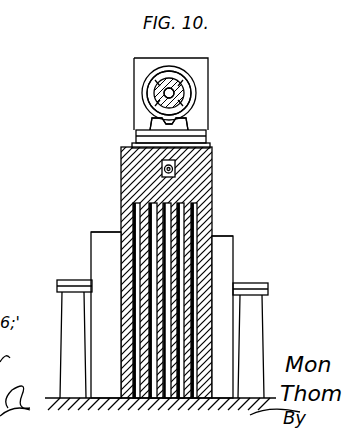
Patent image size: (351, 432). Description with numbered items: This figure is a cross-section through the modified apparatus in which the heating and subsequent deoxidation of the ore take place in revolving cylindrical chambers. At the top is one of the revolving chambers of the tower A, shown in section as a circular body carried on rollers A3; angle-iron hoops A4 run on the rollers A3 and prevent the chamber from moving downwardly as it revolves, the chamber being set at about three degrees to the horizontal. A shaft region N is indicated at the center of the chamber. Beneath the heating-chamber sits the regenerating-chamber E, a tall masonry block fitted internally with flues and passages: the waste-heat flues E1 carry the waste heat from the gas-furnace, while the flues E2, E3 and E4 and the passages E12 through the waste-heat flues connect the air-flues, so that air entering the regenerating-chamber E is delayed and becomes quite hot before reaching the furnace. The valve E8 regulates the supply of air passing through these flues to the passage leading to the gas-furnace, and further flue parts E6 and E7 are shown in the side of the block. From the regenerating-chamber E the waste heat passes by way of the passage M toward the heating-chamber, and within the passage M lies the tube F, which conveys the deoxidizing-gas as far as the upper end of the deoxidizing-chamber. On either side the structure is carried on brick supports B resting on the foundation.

The tower A is at (171, 103).
The motor shaft N is at (196, 95).
The angle-iron hoops A4 is at (198, 108).
The rollers A3 is at (190, 120).
The regenerating-chamber E is at (200, 215).
The tube F is at (175, 166).
The passage M is at (172, 170).
The waste-heat flues E1 is at (165, 261).
The passages through the waste-heat flues E12 is at (168, 250).
The panel top E7 is at (185, 266).
The flue E2 is at (182, 304).
The guide rod E6 is at (152, 334).
The valve E3 is at (136, 358).
The flue E4 is at (194, 316).
The valve E8 is at (180, 347).
The support pillar B is at (162, 339).